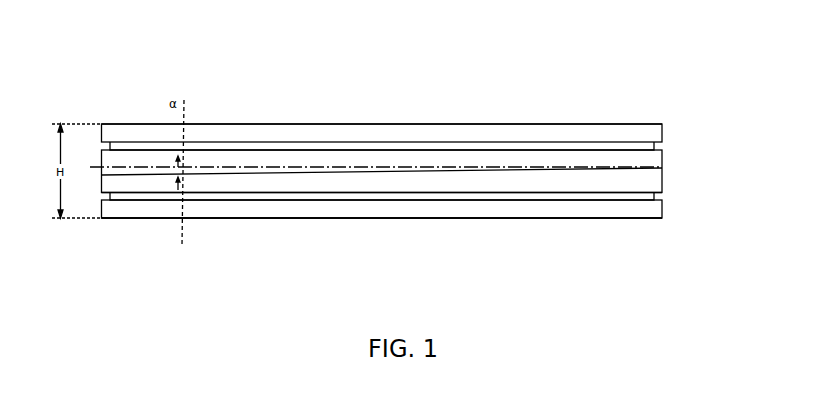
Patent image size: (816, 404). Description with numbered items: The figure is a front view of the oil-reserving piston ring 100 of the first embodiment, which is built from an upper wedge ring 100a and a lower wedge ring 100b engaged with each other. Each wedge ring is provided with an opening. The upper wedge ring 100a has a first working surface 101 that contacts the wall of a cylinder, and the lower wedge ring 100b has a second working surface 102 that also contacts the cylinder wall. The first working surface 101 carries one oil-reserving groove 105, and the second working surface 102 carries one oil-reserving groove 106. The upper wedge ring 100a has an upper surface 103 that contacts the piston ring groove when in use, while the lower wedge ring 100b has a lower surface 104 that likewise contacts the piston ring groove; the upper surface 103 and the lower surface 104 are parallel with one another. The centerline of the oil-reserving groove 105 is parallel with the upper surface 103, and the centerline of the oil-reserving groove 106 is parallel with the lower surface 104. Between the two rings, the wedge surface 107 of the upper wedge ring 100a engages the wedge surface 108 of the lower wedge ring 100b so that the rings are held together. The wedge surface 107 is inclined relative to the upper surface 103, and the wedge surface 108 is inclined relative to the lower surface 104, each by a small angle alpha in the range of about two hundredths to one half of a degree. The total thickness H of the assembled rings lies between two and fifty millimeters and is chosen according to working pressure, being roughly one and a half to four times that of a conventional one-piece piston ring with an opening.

The oil-reserving piston ring 100 is at (645, 102).
The upper wedge ring 100a is at (655, 137).
The lower wedge ring 100b is at (655, 210).
The first working surface 101 is at (243, 132).
The second working surface 102 is at (225, 207).
The upper surface 103 is at (340, 123).
The lower surface 104 is at (372, 217).
The oil-reserving groove 105 is at (492, 147).
The oil-reserving groove 106 is at (522, 195).
The wedge surface 107 is at (392, 172).
The wedge surface 108 is at (161, 175).